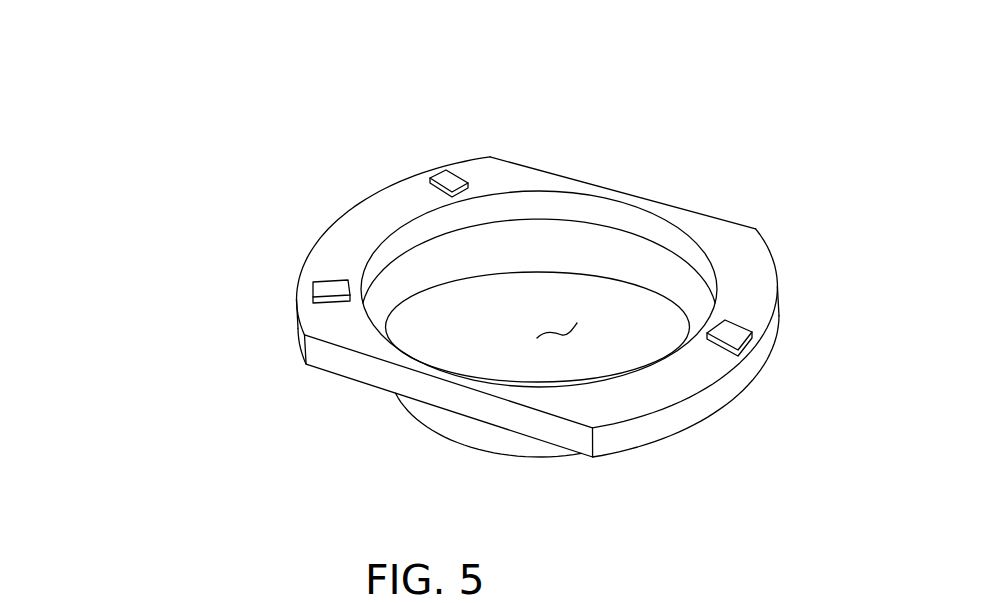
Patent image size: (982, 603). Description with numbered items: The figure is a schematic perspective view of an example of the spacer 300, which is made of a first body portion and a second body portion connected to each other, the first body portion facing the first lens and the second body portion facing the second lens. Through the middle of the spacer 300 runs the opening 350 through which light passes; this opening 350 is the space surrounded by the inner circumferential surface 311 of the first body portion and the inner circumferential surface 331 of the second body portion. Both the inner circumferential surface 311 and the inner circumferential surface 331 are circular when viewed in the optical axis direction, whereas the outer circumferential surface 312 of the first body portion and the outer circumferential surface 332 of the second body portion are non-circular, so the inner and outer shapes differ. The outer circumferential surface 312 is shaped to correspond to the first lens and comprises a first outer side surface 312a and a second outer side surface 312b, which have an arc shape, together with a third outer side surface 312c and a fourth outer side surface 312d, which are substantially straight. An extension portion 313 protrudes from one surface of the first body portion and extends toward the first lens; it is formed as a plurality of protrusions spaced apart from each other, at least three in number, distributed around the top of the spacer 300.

The spacer 300 is at (344, 60).
The inner circumferential surface 311 is at (692, 257).
The outer circumferential surface 312 is at (102, 111).
The first outer side surface 312a is at (352, 208).
The second outer side surface 312b is at (722, 393).
The third outer side surface 312c is at (338, 365).
The fourth outer side surface 312d is at (560, 174).
The extension portion 313 is at (450, 177).
The inner circumferential surface 331 is at (685, 298).
The outer circumferential surface 332 is at (475, 433).
The opening 350 is at (555, 334).